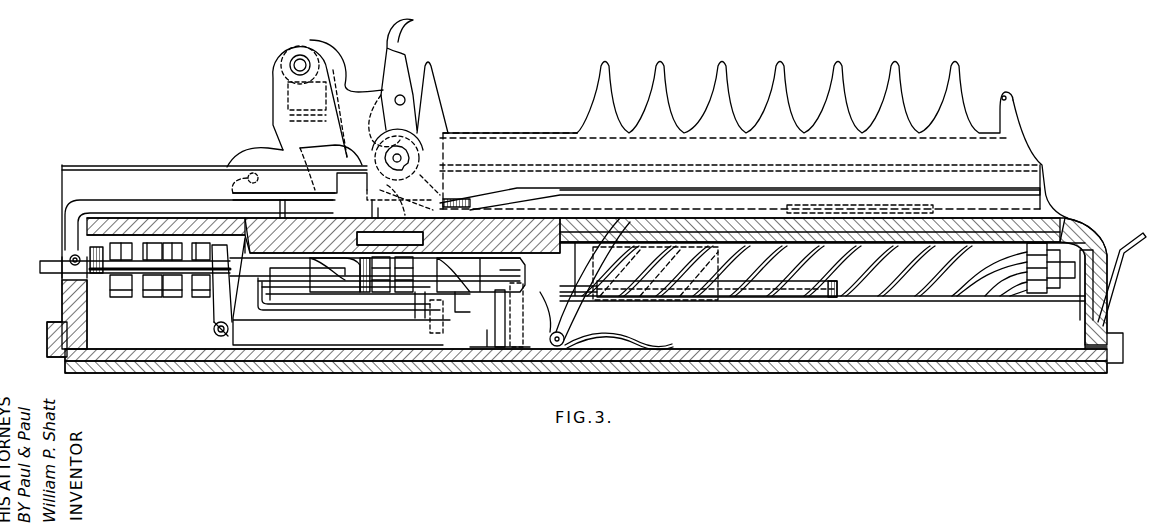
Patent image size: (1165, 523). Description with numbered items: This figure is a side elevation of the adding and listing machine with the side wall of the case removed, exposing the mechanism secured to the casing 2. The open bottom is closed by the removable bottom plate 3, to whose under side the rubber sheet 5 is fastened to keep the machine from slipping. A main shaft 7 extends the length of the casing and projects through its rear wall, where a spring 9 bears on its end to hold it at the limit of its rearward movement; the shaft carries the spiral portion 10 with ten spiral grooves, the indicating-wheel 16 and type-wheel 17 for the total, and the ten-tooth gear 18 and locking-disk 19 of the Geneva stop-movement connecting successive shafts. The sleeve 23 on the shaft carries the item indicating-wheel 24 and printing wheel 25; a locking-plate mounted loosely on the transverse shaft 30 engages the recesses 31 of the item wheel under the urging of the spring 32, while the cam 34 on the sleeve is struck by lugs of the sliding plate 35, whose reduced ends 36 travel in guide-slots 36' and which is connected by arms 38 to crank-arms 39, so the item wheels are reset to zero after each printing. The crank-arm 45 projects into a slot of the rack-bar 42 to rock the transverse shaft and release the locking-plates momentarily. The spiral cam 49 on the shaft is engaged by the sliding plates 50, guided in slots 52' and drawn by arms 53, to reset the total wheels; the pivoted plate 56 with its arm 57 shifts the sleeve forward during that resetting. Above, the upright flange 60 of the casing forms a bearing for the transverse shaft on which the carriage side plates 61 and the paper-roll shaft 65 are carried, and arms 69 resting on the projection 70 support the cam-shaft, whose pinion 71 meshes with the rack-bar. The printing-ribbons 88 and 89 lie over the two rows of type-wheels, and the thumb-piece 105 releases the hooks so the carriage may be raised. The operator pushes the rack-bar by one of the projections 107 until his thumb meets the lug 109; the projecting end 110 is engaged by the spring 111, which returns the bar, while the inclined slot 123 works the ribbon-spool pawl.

The casing 2 is at (62, 300).
The bottom plate 3 is at (463, 357).
The rubber sheet 5 is at (515, 362).
The main shaft 7 is at (48, 263).
The spring 9 is at (1093, 290).
The spiral portion 10 is at (877, 282).
The indicating-wheel 16 is at (1045, 290).
The type-wheel 17 is at (377, 292).
The ten-tooth gear 18 is at (200, 246).
The locking-disk 19 is at (126, 294).
The sleeve 23 is at (463, 280).
The indicating-wheel 24 is at (552, 267).
The printing wheel 25 is at (430, 312).
The transverse shaft 30 is at (550, 347).
The recesses 31 is at (563, 253).
The spring 32 is at (643, 328).
The cam 34 is at (497, 327).
The sliding plate 35 is at (437, 334).
The reduced ends 36 is at (424, 279).
The guide-slots 36' is at (712, 302).
The arms 38 is at (267, 332).
The crank-arms 39 is at (228, 308).
The rack-bar 42 is at (527, 138).
The crank-arm 45 is at (623, 293).
The spiral cam 49 is at (337, 270).
The sliding plates 50 is at (302, 310).
The slots 52' is at (284, 231).
The arms 53 is at (775, 290).
The plate 56 is at (543, 313).
The arm 57 is at (722, 290).
The upright flange 60 is at (223, 165).
The side plates 61 is at (365, 98).
The removable shaft 65 is at (292, 62).
The arms 69 is at (293, 153).
The projection 70 is at (367, 157).
The pinion 71 is at (402, 158).
The printing-ribbon 88 is at (364, 233).
The printing-ribbon 89 is at (405, 233).
The thumb-piece 105 is at (393, 50).
The projections 107 is at (717, 67).
The lug 109 is at (432, 93).
The projecting end 110 is at (120, 205).
The spring 111 is at (75, 258).
The slot 123 is at (865, 193).